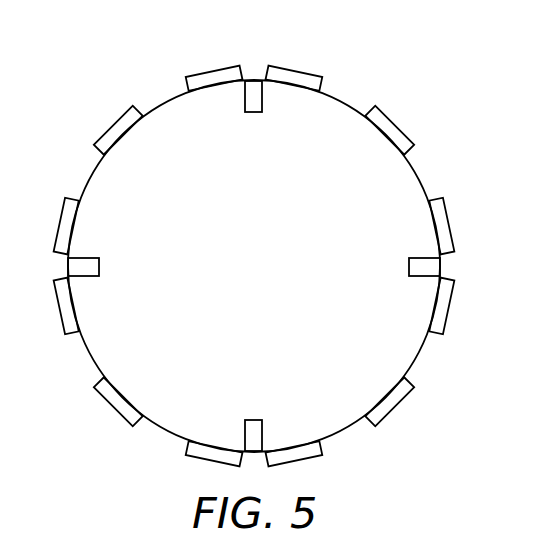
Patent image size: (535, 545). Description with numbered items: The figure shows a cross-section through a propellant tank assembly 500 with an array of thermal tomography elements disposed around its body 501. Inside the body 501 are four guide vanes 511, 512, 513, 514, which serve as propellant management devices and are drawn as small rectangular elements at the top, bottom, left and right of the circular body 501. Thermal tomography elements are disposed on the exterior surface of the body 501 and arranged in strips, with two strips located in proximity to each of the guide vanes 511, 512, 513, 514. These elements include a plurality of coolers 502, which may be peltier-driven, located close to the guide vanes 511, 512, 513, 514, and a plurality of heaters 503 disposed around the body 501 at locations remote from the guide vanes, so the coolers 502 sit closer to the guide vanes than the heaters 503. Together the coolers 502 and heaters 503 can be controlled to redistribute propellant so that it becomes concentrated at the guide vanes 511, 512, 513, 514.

The propellant tank assembly 500 is at (388, 69).
The body 501 is at (88, 177).
The coolers 502 is at (452, 310).
The heaters 503 is at (112, 410).
The guide vane 511 is at (409, 267).
The guide vane 512 is at (251, 420).
The guide vane 513 is at (99, 267).
The guide vane 514 is at (251, 113).